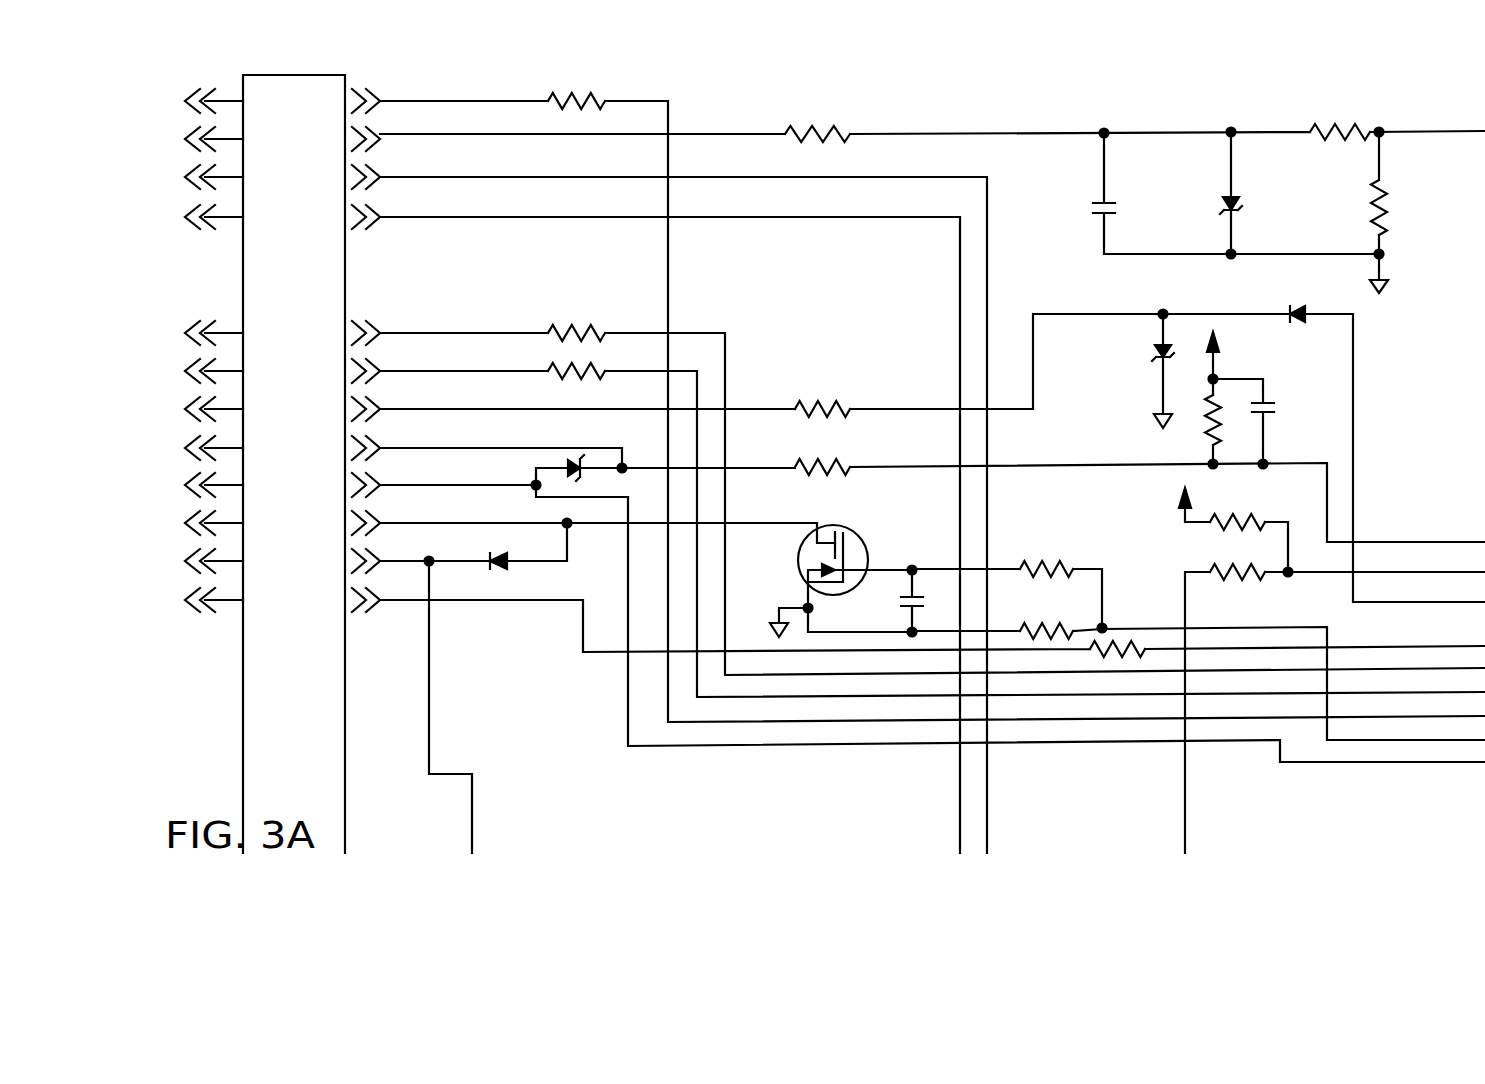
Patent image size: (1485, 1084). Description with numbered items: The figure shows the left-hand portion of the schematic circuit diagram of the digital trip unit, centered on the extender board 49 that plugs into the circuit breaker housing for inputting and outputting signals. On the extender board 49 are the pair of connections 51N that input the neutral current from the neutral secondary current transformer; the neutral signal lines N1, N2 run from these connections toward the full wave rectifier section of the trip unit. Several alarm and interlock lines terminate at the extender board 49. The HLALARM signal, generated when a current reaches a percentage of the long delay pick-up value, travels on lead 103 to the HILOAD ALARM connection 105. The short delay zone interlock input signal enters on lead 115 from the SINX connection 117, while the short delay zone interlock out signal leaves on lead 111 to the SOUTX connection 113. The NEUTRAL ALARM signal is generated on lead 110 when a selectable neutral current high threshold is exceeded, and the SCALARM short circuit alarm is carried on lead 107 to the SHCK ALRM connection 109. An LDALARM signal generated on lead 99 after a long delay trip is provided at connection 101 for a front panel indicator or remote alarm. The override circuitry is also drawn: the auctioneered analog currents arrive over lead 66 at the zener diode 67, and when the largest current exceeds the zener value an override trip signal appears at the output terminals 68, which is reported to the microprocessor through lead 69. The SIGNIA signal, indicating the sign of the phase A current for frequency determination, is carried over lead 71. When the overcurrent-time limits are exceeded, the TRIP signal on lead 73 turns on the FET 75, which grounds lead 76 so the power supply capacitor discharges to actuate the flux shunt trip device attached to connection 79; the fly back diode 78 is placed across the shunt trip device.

The extender board 49 is at (293, 75).
The HILOAD ALARM connection 105 is at (196, 99).
The SINX connection 117 is at (196, 137).
The neutral current connection pair 51N is at (197, 196).
The HLALARM lead 103 is at (428, 100).
The short delay zone interlock input lead 115 is at (428, 134).
The neutral current signal lead N2 is at (430, 177).
The neutral current signal lead N1 is at (430, 217).
The NEUTRAL ALARM lead 110 is at (430, 333).
The SCALARM lead 107 is at (430, 371).
The short delay zone interlock out lead 111 is at (430, 409).
The SHCK ALRM connection 109 is at (198, 378).
The SOUTX connection 113 is at (198, 418).
The override trip output terminals 68 is at (197, 478).
The zener diode 67 is at (577, 462).
The override report lead 69 is at (880, 464).
The shunt trip connection 79 is at (196, 556).
The fly back diode 78 is at (500, 563).
The FET 75 is at (845, 533).
The LDALARM connection 101 is at (200, 607).
The LDALARM lead 99 is at (470, 602).
The discharge lead 76 is at (430, 712).
The TRIP signal lead 73 is at (1258, 627).
The SIGNIA lead 71 is at (1402, 573).
The auctioneered current lead 66 is at (1366, 767).